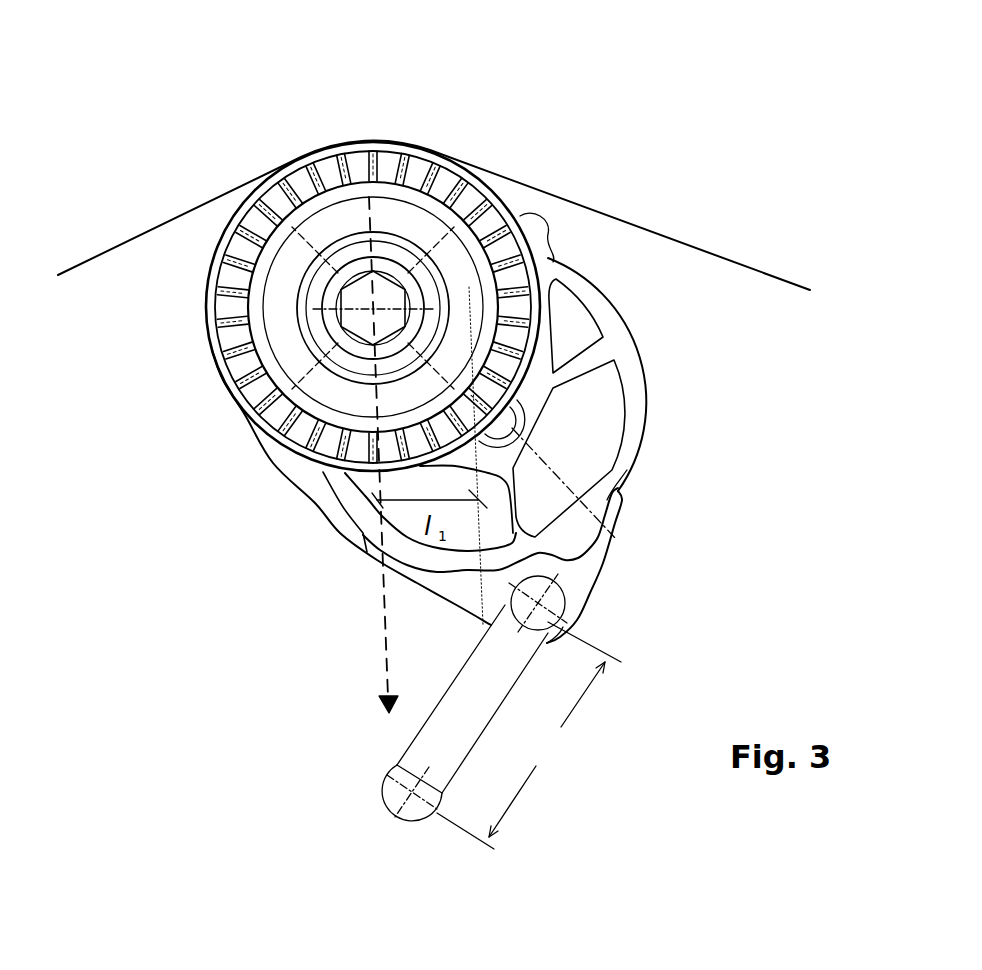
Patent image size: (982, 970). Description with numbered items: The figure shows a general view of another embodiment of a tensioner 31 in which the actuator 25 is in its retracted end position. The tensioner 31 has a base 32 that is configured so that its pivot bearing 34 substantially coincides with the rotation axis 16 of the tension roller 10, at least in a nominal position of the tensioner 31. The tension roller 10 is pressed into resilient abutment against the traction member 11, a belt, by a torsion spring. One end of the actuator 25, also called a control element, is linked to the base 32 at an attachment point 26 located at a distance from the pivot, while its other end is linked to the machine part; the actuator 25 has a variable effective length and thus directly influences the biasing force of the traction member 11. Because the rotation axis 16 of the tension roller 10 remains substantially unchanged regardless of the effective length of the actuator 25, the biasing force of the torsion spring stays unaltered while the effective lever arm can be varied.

The tension roller 10 is at (338, 168).
The traction member 11 is at (690, 240).
The rotation axis 16 is at (373, 305).
The pivot bearing 34 is at (407, 197).
The actuator 25 is at (440, 732).
The attachment point 26 is at (540, 605).
The tensioner 31 is at (508, 142).
The base 32 is at (602, 420).